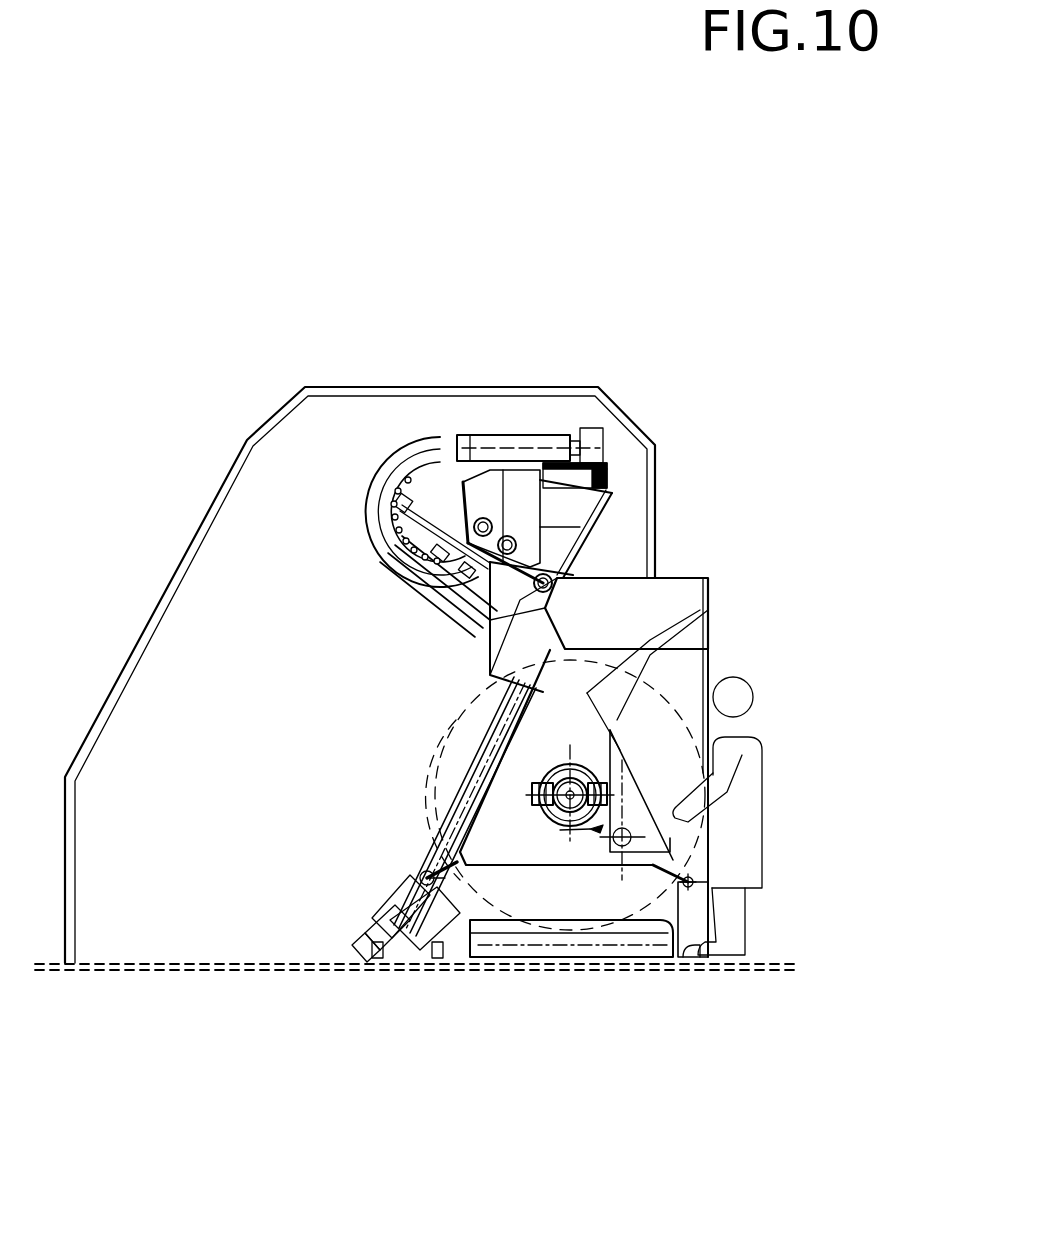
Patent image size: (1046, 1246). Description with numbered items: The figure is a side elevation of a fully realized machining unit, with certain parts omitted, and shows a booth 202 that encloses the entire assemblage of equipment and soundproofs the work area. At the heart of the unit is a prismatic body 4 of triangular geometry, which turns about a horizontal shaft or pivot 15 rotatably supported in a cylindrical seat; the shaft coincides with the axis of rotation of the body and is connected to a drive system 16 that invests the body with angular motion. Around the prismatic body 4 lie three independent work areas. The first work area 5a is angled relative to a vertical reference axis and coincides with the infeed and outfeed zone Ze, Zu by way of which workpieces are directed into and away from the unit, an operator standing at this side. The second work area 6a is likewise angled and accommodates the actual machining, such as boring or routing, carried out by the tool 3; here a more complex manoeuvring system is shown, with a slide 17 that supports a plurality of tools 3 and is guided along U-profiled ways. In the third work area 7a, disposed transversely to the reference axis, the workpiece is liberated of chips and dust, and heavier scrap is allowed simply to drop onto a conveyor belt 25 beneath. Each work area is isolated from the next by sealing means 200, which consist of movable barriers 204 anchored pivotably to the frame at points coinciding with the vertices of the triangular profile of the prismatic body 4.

The tool 3 is at (490, 615).
The prismatic body 4 is at (570, 787).
The first work area 5a is at (587, 693).
The second work area 6a is at (510, 803).
The third work area 7a is at (510, 865).
The horizontal shaft or pivot 15 is at (565, 835).
The drive system 16 is at (628, 847).
The slide 17 is at (430, 837).
The conveyor belt 25 is at (497, 948).
The sealing means 200 is at (705, 895).
The booth 202 is at (75, 935).
The movable barriers 204 is at (743, 958).
The outfeed zone Zu is at (647, 727).
The infeed zone Ze is at (690, 828).